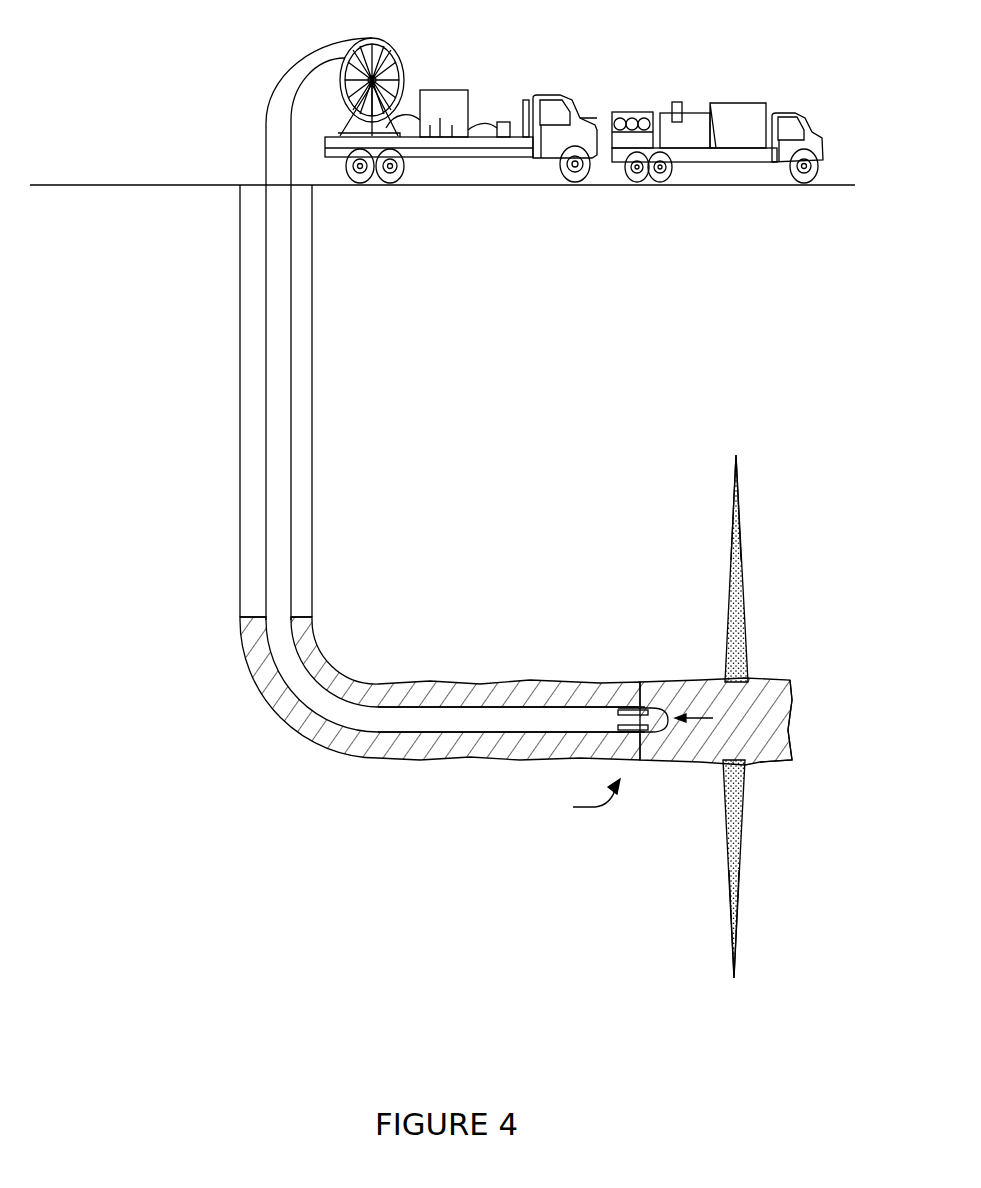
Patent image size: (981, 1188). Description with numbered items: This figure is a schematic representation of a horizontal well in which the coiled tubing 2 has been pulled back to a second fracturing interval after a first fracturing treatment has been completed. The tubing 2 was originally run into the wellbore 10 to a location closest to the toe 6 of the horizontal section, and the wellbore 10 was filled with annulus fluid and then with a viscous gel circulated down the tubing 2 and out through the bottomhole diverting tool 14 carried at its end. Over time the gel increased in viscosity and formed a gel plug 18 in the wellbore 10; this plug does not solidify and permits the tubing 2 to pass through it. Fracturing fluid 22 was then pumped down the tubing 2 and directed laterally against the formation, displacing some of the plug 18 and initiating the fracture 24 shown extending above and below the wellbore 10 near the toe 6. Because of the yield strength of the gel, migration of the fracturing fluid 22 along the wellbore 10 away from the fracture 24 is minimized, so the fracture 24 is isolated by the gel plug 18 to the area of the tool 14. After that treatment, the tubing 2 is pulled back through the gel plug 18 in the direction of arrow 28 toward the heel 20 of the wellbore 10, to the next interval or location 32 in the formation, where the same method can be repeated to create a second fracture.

The coiled tubing 2 is at (507, 702).
The toe 6 is at (786, 731).
The wellbore 10 is at (612, 681).
The diverting tool 14 is at (650, 712).
The gel plug 18 is at (759, 708).
The heel 20 is at (240, 612).
The fracturing fluid 22 is at (746, 648).
The fracture 24 is at (742, 572).
The arrow 28 is at (697, 718).
The next interval 32 is at (578, 799).